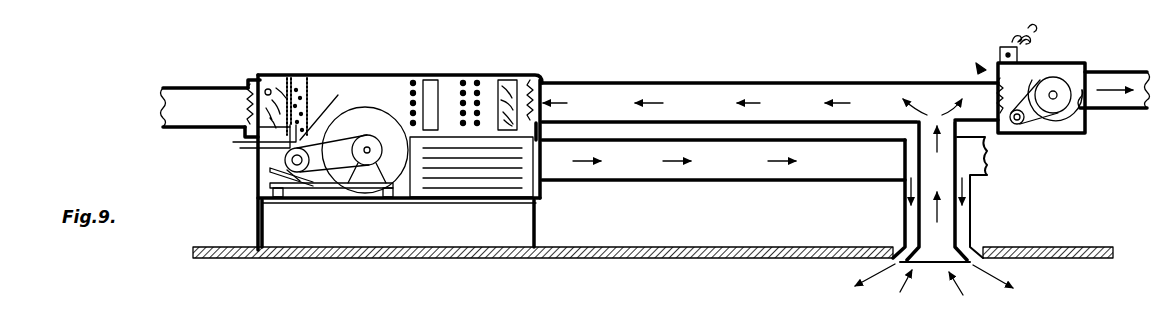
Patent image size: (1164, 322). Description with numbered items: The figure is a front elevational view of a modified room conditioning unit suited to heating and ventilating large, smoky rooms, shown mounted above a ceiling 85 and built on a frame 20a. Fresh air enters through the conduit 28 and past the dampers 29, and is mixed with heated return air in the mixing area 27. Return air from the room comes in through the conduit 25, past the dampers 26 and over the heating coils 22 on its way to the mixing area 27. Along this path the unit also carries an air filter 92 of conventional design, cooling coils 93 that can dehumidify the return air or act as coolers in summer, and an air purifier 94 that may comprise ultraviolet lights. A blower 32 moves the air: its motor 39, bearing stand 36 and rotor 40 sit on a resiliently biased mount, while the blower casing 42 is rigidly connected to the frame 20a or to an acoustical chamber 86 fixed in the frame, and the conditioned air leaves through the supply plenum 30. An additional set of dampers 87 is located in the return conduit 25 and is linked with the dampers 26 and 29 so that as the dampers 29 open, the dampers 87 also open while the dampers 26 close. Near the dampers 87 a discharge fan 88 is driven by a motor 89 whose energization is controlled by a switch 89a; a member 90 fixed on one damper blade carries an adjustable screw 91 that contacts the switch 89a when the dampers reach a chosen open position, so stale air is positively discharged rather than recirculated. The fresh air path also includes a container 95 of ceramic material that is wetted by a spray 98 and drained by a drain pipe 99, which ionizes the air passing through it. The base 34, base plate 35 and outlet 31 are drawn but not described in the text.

The conduit 28 is at (201, 88).
The dampers 29 is at (248, 84).
The spray 98 is at (272, 80).
The container 95 is at (305, 80).
The mixing area 27 is at (356, 64).
The air purifier 94 is at (412, 80).
The heating coils 22 is at (432, 79).
The cooling coils 93 is at (476, 82).
The air filter 92 is at (524, 80).
The dampers 26 is at (548, 63).
The conduit 25 is at (672, 83).
The blower casing 42 is at (364, 104).
The blower 32 is at (396, 118).
The rotor 40 is at (373, 138).
The drain pipe 99 is at (233, 143).
The motor 39 is at (258, 162).
The frame 20a is at (258, 180).
The base 34 is at (272, 200).
The base plate 35 is at (303, 198).
The bearing stand 36 is at (374, 183).
The acoustical chamber 86 is at (497, 180).
The ceiling 85 is at (713, 250).
The supply plenum 30 is at (747, 180).
The outlet 31 is at (985, 262).
The motor 89 is at (1005, 133).
The discharge fan 88 is at (1053, 133).
The dampers 87 is at (1025, 63).
The switch 89a is at (1008, 46).
The adjustable screw 91 is at (1000, 55).
The member 90 is at (998, 84).